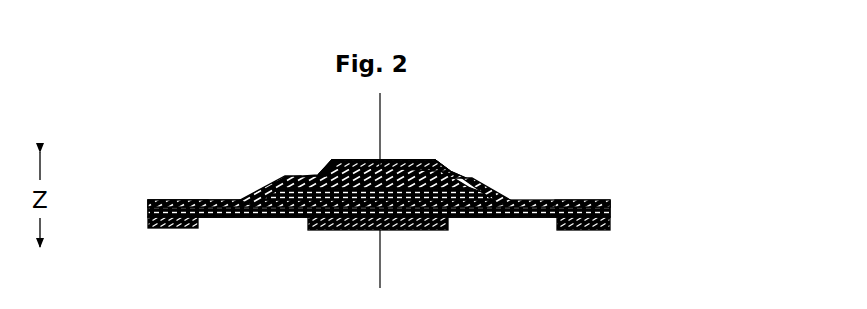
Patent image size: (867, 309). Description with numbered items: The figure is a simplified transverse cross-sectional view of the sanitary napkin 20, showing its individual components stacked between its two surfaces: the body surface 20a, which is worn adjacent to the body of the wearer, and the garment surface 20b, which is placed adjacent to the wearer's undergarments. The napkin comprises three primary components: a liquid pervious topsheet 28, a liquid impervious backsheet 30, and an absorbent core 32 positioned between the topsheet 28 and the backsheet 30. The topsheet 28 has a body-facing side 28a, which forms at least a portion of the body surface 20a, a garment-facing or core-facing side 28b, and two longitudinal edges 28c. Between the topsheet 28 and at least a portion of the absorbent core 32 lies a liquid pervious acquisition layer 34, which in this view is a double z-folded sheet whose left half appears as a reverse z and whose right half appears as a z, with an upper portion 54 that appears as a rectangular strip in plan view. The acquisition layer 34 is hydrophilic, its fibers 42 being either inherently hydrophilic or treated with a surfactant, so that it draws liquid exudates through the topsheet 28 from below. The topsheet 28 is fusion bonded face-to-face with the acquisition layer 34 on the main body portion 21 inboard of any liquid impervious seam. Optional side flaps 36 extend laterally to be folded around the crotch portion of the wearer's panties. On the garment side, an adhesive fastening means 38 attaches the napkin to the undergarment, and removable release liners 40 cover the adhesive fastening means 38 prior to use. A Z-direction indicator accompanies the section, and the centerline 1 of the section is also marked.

The center line 1 is at (382, 109).
The sanitary napkin 20 is at (509, 143).
The body surface 20a is at (428, 152).
The garment surface 20b is at (471, 232).
The main body portion 21 is at (323, 142).
The topsheet 28 is at (446, 168).
The body-facing side of the topsheet 28a is at (340, 159).
The garment-facing side of the topsheet 28b is at (400, 158).
The longitudinal edges of the topsheet 28c is at (148, 206).
The backsheet 30 is at (515, 218).
The absorbent core 32 is at (492, 195).
The acquisition layer 34 is at (315, 174).
The side flaps 36 is at (192, 200).
The adhesive fastening means 38 is at (307, 222).
The release liners 40 is at (170, 229).
The fibers 42 is at (448, 171).
The upper portion 54 is at (337, 158).